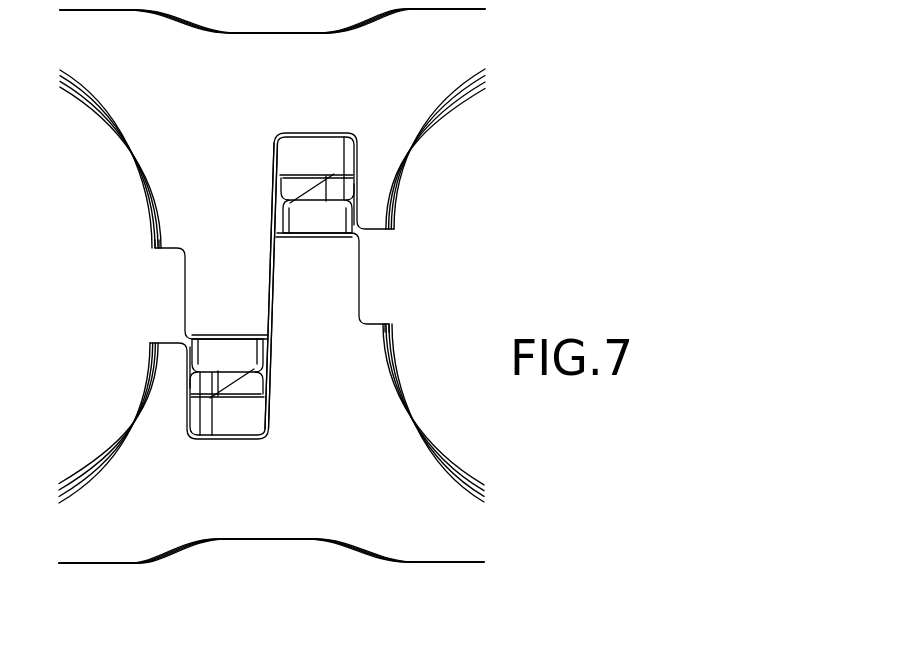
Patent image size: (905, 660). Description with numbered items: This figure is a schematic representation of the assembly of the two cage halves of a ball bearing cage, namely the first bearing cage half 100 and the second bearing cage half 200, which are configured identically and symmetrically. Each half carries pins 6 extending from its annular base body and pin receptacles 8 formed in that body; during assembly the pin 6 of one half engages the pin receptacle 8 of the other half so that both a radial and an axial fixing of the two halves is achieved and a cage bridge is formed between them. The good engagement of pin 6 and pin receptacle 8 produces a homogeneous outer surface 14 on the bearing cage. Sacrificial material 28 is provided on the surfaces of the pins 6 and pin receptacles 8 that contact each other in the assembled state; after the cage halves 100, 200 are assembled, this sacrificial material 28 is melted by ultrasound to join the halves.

The first bearing cage half 100 is at (465, 34).
The second bearing cage half 200 is at (433, 540).
The pin receptacle 8 is at (316, 133).
The outer surface 14 is at (212, 292).
The pin 6 is at (340, 220).
The sacrificial material 28 is at (323, 181).